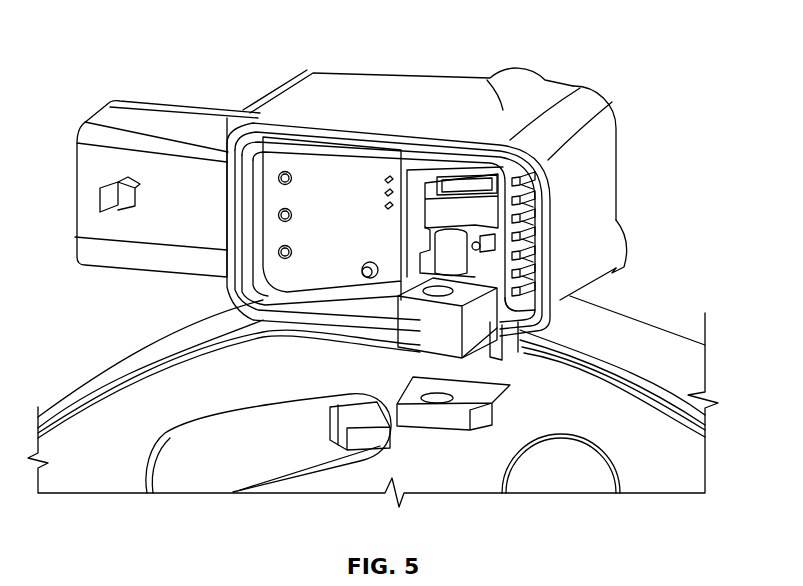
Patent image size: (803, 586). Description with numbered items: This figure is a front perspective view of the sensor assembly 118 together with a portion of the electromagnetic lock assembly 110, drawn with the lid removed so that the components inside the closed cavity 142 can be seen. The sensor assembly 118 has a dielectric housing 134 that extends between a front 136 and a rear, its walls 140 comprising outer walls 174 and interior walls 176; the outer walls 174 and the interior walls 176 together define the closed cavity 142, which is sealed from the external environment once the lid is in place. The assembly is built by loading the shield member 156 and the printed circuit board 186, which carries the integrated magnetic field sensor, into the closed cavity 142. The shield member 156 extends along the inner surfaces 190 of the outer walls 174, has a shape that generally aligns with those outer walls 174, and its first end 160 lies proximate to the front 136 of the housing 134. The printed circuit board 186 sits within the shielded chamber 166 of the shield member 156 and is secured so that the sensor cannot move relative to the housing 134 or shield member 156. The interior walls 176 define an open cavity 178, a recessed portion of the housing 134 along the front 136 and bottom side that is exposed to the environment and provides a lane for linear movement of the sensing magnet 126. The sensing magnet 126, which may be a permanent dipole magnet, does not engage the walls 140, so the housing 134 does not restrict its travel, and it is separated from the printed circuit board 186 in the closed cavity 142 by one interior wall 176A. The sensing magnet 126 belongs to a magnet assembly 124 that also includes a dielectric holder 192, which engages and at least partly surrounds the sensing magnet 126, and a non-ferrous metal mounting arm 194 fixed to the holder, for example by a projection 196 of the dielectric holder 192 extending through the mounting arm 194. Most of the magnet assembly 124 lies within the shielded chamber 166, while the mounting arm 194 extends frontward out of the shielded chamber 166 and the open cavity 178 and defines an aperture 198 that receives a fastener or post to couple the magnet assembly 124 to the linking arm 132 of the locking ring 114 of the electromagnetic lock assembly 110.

The electromagnetic lock assembly 110 is at (398, 288).
The locking ring 114 is at (623, 418).
The sensor assembly 118 is at (403, 283).
The magnet assembly 124 is at (507, 296).
The sensing magnet 126 is at (473, 187).
The linking arm 132 is at (463, 400).
The housing 134 is at (337, 90).
The front 136 is at (556, 220).
The walls 140 is at (497, 107).
The closed cavity 142 is at (243, 139).
The shield member 156 is at (247, 175).
The first end 160 is at (551, 203).
The shielded chamber 166 is at (320, 175).
The outer walls 174 is at (320, 328).
The interior walls 176 is at (513, 197).
The interior wall 176A is at (415, 192).
The open cavity 178 is at (426, 172).
The printed circuit board 186 is at (288, 150).
The inner surfaces 190 is at (233, 283).
The dielectric holder 192 is at (480, 220).
The mounting arm 194 is at (490, 335).
The projection 196 is at (482, 315).
The aperture 198 is at (423, 298).